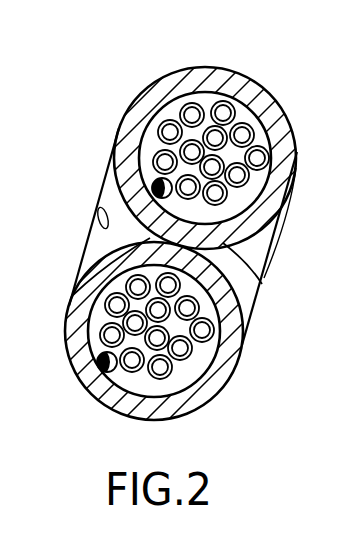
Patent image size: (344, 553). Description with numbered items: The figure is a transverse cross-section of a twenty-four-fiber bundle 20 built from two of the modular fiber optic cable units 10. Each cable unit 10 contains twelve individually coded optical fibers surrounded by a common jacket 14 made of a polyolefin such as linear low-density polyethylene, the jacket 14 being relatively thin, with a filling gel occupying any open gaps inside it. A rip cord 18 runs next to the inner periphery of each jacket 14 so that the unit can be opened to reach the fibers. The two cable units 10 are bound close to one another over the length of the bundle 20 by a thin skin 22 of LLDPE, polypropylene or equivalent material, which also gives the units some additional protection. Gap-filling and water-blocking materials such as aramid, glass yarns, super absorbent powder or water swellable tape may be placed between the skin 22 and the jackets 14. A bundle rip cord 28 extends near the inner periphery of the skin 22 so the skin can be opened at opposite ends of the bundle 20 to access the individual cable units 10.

The bundle 20 is at (172, 216).
The cable unit 10 is at (214, 92).
The rip cord 18 is at (156, 192).
The skin 22 is at (86, 237).
The bundle rip cord 28 is at (80, 257).
The jacket 14 is at (235, 290).